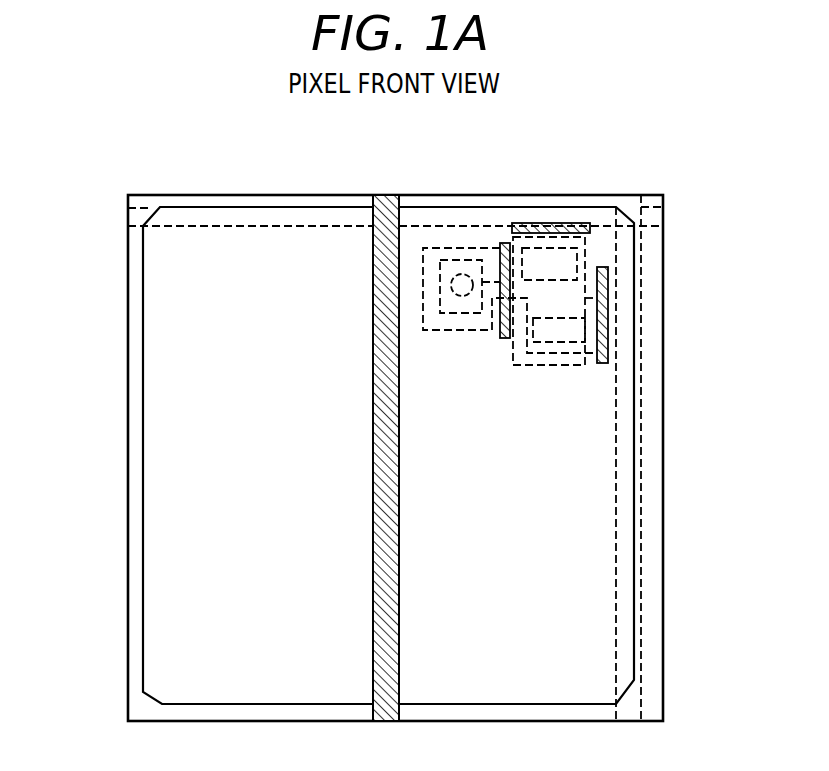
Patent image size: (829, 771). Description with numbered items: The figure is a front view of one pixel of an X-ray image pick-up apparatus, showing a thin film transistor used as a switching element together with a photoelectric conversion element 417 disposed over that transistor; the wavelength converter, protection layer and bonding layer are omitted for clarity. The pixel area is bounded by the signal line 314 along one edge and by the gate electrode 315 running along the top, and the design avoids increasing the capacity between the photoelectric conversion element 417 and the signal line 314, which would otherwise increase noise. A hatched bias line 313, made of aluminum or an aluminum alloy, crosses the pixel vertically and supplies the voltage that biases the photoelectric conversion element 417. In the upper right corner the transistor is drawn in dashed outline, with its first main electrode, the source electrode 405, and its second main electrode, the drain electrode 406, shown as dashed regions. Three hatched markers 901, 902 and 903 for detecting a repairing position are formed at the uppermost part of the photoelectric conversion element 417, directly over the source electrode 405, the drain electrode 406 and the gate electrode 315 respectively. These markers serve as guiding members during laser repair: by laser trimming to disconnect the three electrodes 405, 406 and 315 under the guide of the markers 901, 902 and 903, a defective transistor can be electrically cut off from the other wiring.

The bias line 313 is at (382, 195).
The signal line 314 is at (632, 700).
The gate electrode 315 is at (128, 222).
The first main electrode (source electrode) 405 is at (537, 262).
The second main electrode (drain electrode) 406 is at (563, 333).
The photoelectric conversion element 417 is at (157, 507).
The marker 901 is at (505, 338).
The marker 902 is at (608, 308).
The marker 903 is at (572, 223).